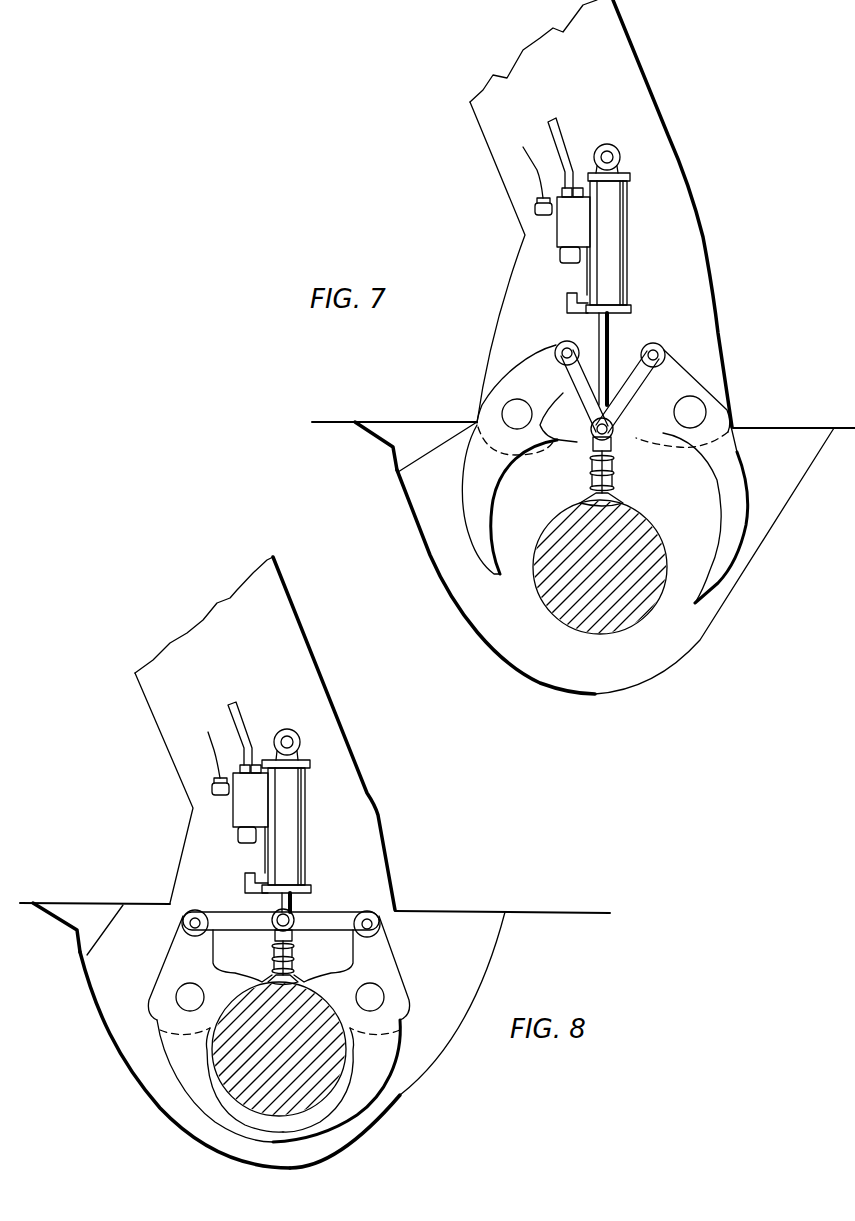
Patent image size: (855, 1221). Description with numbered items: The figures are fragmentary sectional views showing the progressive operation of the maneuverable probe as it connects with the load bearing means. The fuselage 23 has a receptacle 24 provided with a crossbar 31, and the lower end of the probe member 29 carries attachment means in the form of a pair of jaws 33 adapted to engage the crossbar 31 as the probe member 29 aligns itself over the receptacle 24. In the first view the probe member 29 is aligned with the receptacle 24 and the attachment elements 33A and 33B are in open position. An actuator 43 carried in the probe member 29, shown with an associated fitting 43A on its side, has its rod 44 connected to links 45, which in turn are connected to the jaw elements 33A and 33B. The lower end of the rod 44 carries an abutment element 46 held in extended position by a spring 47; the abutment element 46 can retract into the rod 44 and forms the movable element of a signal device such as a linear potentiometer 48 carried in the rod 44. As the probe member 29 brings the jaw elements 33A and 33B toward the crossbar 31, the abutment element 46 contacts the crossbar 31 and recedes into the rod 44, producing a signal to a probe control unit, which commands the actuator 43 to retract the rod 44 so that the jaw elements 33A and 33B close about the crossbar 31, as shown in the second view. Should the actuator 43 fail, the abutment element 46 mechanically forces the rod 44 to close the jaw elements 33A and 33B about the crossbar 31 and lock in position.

In FIG. 7, the fuselage 23 is at (333, 422).
In FIG. 8, the fuselage 23 is at (532, 911).
In FIG. 7, the receptacle 24 is at (445, 422).
In FIG. 8, the receptacle 24 is at (124, 904).
In FIG. 7, the probe member 29 is at (637, 63).
In FIG. 8, the probe member 29 is at (313, 688).
In FIG. 7, the crossbar 31 is at (640, 608).
In FIG. 8, the crossbar 31 is at (270, 1093).
In FIG. 7, the jaws 33 is at (755, 446).
In FIG. 8, the jaws 33 is at (415, 935).
In FIG. 7, the jaw element 33A is at (725, 544).
In FIG. 8, the jaw element 33A is at (355, 1090).
In FIG. 7, the jaw element 33B is at (477, 533).
In FIG. 8, the jaw element 33B is at (185, 1072).
In FIG. 7, the actuator 43 is at (608, 222).
In FIG. 8, the actuator 43 is at (292, 808).
In FIG. 7, the cylinder fitting 43A is at (548, 223).
In FIG. 8, the cylinder fitting 43A is at (212, 807).
In FIG. 7, the rod 44 is at (607, 337).
In FIG. 8, the rod 44 is at (292, 906).
In FIG. 7, the links 45 is at (580, 385).
In FIG. 8, the links 45 is at (228, 912).
In FIG. 7, the abutment element 46 is at (620, 494).
In FIG. 8, the abutment element 46 is at (280, 983).
In FIG. 7, the spring 47 is at (613, 477).
In FIG. 8, the spring 47 is at (295, 958).
In FIG. 7, the linear potentiometer 48 is at (593, 443).
In FIG. 8, the linear potentiometer 48 is at (274, 933).